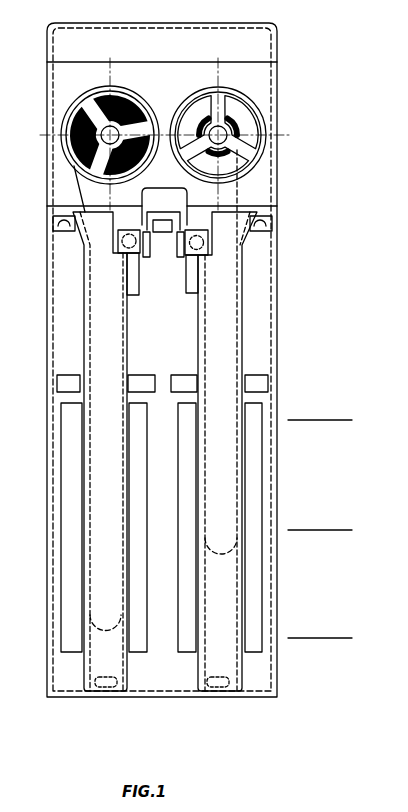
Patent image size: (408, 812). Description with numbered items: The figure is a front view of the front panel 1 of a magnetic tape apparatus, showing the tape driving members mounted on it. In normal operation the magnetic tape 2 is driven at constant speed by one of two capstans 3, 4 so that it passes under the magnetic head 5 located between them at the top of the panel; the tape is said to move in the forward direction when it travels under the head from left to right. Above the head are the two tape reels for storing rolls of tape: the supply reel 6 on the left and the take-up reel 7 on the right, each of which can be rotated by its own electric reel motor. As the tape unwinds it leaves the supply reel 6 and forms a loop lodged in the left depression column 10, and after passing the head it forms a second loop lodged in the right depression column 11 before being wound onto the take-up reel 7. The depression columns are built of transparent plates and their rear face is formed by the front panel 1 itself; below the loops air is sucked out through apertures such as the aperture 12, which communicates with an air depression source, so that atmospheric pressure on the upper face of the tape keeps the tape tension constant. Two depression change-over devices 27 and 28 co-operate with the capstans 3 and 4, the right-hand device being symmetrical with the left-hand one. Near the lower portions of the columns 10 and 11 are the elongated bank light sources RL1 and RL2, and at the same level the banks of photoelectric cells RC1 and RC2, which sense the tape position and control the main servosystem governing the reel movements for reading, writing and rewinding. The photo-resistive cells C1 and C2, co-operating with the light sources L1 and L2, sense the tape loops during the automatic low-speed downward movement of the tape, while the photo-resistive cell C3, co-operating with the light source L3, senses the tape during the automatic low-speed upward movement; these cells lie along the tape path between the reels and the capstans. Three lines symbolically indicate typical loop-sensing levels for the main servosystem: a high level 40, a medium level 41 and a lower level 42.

The front panel 1 is at (267, 71).
The magnetic tape 2 is at (238, 193).
The capstan 3 is at (139, 262).
The capstan 4 is at (188, 262).
The magnetic head 5 is at (161, 222).
The supply reel 6 is at (60, 136).
The take-up reel 7 is at (262, 128).
The depression column 10 is at (84, 308).
The depression column 11 is at (242, 300).
The aperture 12 is at (107, 683).
The depression change-over device 27 is at (118, 253).
The depression change-over device 28 is at (210, 254).
The high level 40 is at (333, 419).
The medium level 41 is at (333, 529).
The lower level 42 is at (333, 637).
The photo-resistive cell C1 is at (72, 383).
The photo-resistive cell C2 is at (262, 383).
The photo-resistive cell C3 is at (56, 226).
The light source L1 is at (140, 378).
The light source L2 is at (182, 378).
The light source L3 is at (270, 229).
The light source RL1 is at (137, 426).
The light source RL2 is at (188, 441).
The bank of photoelectric cells RC1 is at (72, 480).
The bank of photoelectric cells RC2 is at (253, 573).